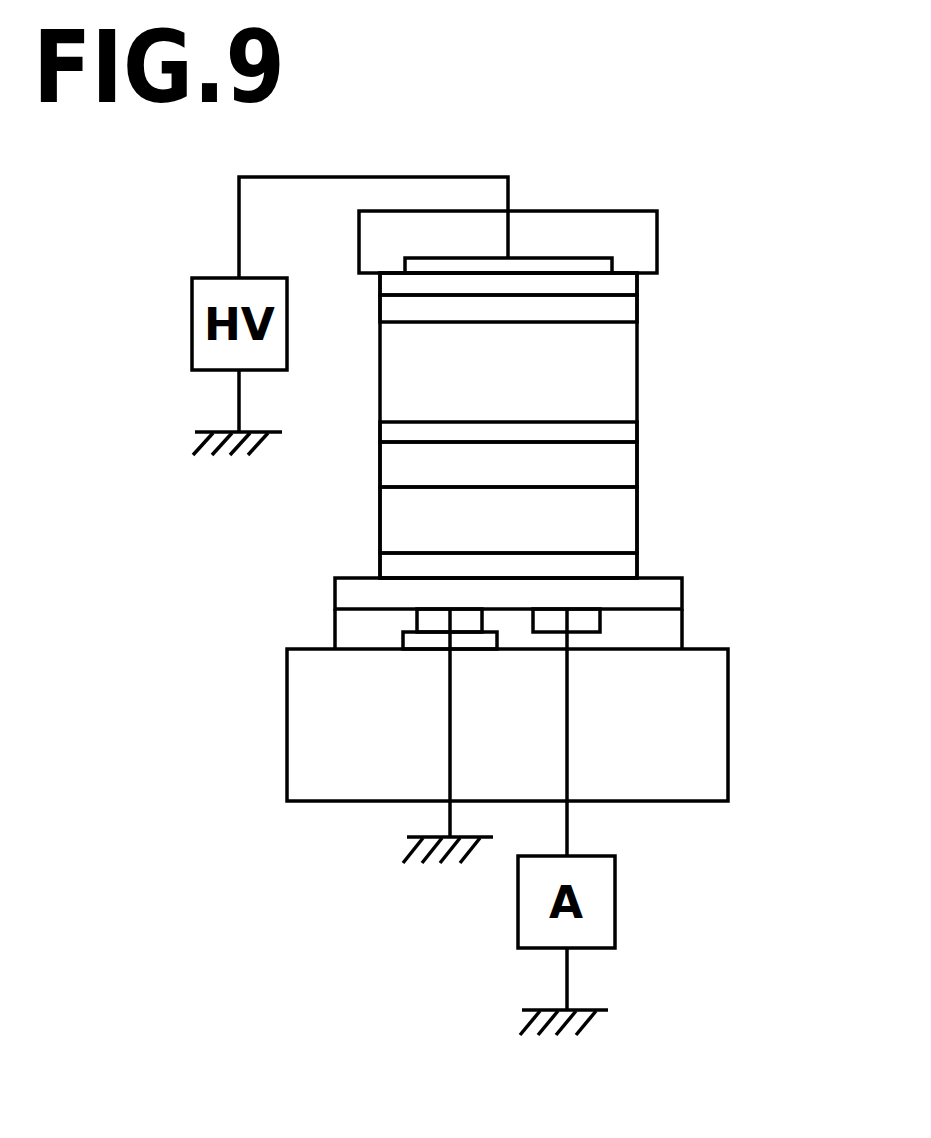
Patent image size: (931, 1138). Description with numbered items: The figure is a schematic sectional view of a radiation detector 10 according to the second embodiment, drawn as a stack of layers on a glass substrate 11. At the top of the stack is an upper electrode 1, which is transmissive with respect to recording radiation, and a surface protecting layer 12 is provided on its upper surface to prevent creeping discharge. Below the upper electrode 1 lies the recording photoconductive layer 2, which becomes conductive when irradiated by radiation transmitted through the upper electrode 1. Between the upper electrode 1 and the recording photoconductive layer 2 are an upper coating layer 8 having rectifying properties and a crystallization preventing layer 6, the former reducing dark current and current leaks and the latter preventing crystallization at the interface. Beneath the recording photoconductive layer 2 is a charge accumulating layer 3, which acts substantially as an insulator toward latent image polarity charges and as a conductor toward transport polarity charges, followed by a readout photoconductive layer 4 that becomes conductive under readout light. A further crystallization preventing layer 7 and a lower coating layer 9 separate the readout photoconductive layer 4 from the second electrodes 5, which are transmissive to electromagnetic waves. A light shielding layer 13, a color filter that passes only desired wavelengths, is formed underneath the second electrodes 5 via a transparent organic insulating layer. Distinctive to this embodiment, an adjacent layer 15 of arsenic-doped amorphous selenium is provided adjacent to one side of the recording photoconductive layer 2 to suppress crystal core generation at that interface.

The upper electrode 1 is at (613, 263).
The recording photoconductive layer 2 is at (640, 386).
The charge accumulating layer 3 is at (640, 459).
The readout photoconductive layer 4 is at (640, 517).
The second electrodes 5 is at (600, 620).
The crystallization preventing layer 6 is at (640, 311).
The crystallization preventing layer 7 is at (640, 563).
The upper coating layer 8 is at (640, 285).
The lower coating layer 9 is at (684, 596).
The radiation detector 10 is at (236, 536).
The glass substrate 11 is at (728, 770).
The surface protecting layer 12 is at (657, 222).
The light shielding layer 13 is at (350, 715).
The adjacent layer 15 is at (640, 431).